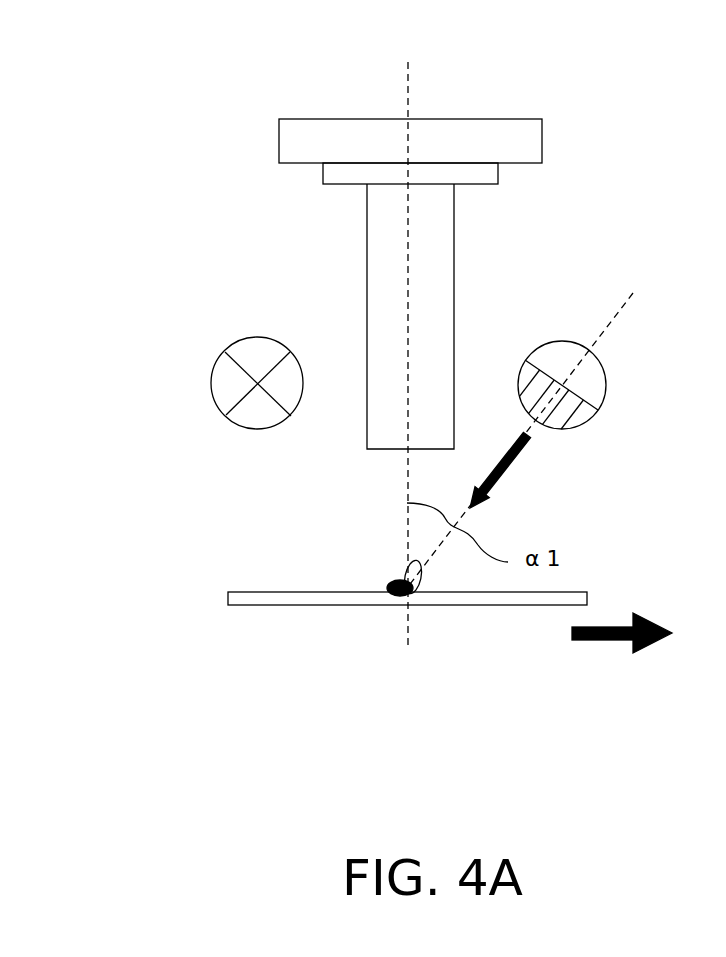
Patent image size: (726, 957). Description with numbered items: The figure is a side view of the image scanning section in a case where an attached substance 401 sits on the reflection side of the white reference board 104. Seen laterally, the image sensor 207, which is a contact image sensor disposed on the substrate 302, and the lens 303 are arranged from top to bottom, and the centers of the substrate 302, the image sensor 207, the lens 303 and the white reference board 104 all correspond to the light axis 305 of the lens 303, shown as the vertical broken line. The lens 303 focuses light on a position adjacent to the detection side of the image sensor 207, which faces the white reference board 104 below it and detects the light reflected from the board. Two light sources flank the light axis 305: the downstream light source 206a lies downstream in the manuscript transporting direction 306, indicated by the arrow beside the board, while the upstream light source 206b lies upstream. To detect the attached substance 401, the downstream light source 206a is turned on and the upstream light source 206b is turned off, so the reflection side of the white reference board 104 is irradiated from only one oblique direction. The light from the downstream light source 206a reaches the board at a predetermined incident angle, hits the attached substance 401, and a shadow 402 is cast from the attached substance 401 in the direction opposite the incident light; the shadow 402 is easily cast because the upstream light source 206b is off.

The white reference board 104 is at (257, 602).
The downstream light source 206a is at (600, 407).
The upstream light source 206b is at (217, 407).
The image sensor 207 is at (487, 176).
The substrate 302 is at (527, 128).
The lens 303 is at (445, 233).
The light axis 305 is at (403, 88).
The manuscript transporting direction 306 is at (602, 640).
The attached substance 401 is at (417, 582).
The shadow 402 is at (400, 593).